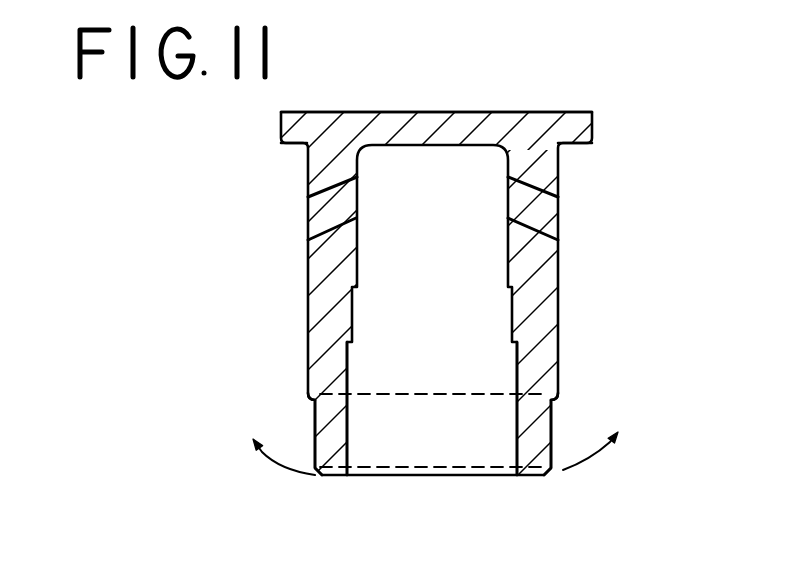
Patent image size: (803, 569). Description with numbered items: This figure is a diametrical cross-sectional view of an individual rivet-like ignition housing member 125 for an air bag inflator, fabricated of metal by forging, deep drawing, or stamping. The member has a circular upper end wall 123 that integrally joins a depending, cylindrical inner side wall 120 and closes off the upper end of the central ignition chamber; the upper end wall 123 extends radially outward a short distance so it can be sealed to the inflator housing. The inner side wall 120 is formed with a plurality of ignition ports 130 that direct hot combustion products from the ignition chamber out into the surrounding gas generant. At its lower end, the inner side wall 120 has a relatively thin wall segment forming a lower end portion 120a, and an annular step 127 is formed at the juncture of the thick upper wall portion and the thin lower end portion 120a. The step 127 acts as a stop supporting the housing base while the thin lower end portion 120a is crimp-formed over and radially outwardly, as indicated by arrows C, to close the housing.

The inner side wall 120 is at (308, 273).
The upper end wall 123 is at (469, 123).
The ignition ports 130 is at (310, 200).
The annular step 127 is at (312, 402).
The lower end portion 120a is at (334, 451).
The rivet-like ignition housing member 125 is at (448, 527).
The arrows C is at (290, 468).